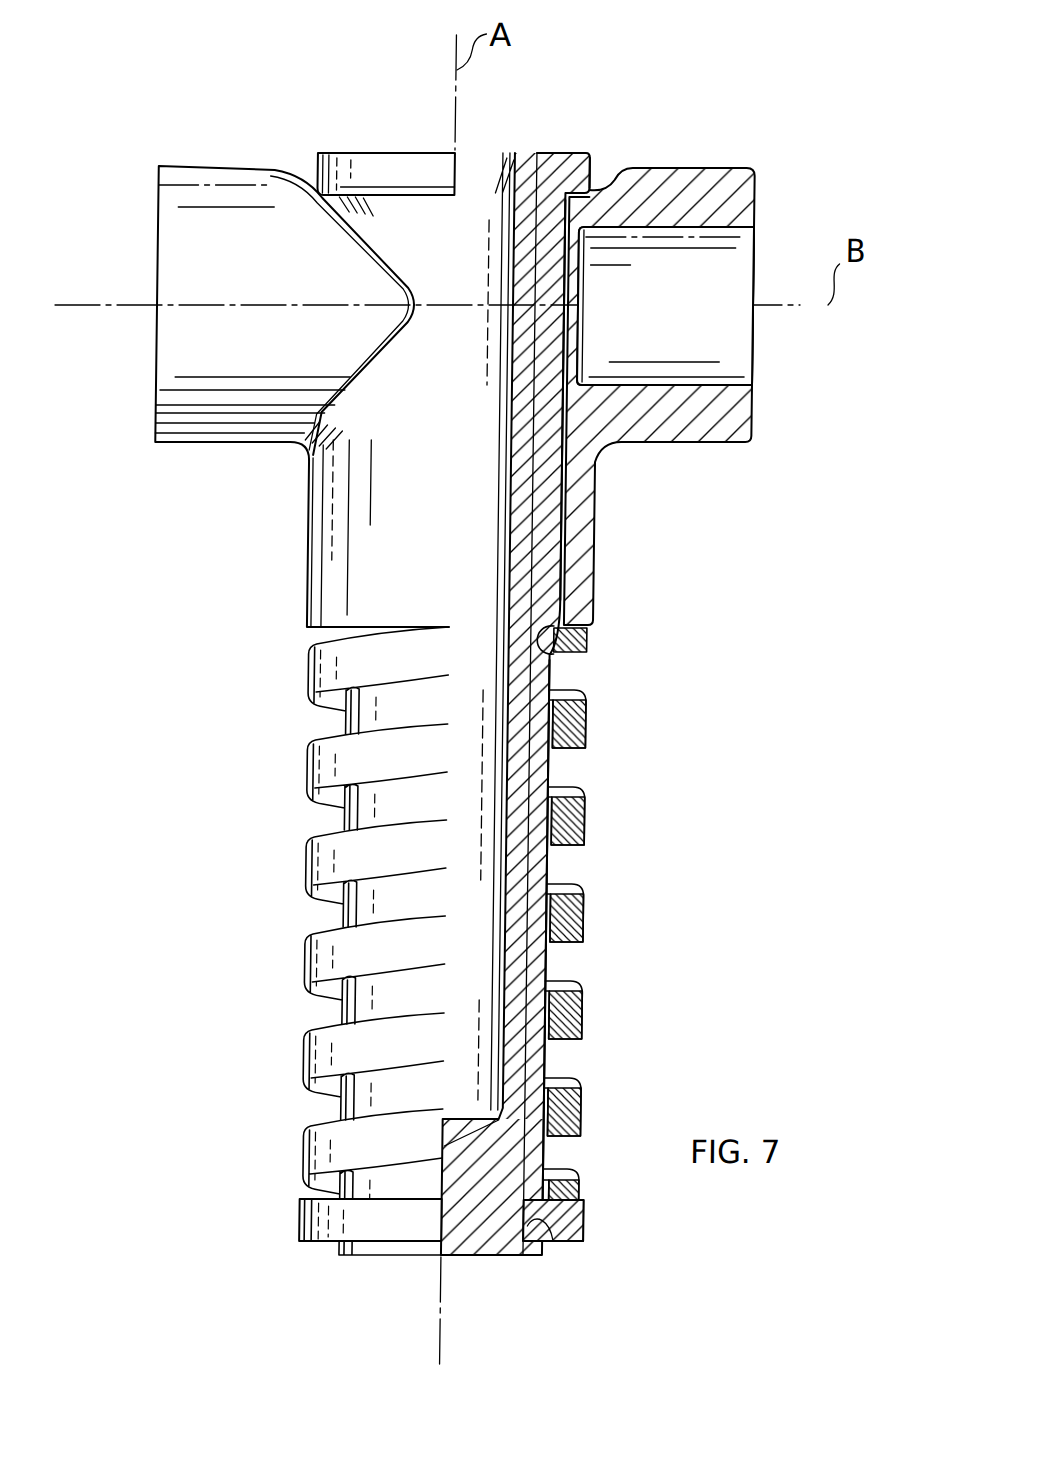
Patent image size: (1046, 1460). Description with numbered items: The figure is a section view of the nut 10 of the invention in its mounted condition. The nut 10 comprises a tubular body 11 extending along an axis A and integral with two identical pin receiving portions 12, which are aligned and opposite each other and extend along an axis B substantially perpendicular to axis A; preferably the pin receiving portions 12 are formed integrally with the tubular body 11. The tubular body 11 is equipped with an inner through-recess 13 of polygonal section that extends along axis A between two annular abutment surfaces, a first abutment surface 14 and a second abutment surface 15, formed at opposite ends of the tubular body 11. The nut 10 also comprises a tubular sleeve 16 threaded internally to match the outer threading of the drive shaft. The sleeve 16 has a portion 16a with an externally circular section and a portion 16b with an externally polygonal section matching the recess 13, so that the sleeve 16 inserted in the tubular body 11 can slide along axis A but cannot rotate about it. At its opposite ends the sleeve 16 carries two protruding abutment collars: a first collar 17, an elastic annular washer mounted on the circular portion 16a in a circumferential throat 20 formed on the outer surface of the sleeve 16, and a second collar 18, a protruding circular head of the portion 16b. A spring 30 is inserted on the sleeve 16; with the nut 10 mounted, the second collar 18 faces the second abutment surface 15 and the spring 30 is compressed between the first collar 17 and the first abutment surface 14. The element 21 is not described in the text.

The nut 10 is at (658, 131).
The tubular body 11 is at (579, 588).
The pin receiving portions 12 is at (199, 185).
The inner through-recess 13 is at (539, 638).
The first abutment surface 14 is at (304, 632).
The second abutment surface 15 is at (594, 164).
The tubular sleeve 16 is at (573, 651).
The circular portion of the sleeve 16a is at (553, 961).
The polygonal portion of the sleeve 16b is at (561, 508).
The first collar 17 is at (311, 1216).
The second collar 18 is at (348, 175).
The circumferential throat 20 is at (574, 1264).
The nut end face 21 is at (545, 1256).
The spring 30 is at (589, 816).